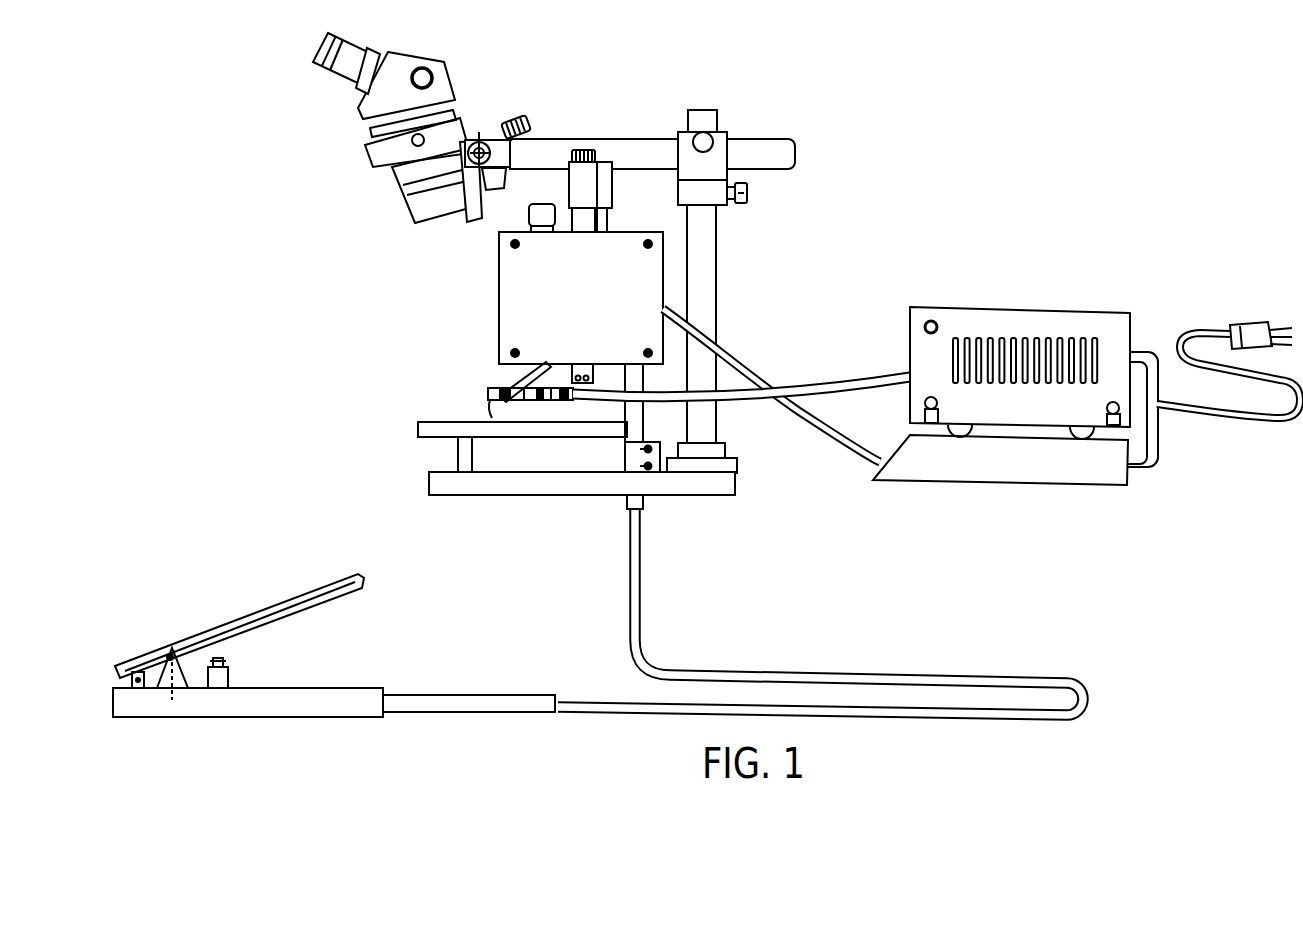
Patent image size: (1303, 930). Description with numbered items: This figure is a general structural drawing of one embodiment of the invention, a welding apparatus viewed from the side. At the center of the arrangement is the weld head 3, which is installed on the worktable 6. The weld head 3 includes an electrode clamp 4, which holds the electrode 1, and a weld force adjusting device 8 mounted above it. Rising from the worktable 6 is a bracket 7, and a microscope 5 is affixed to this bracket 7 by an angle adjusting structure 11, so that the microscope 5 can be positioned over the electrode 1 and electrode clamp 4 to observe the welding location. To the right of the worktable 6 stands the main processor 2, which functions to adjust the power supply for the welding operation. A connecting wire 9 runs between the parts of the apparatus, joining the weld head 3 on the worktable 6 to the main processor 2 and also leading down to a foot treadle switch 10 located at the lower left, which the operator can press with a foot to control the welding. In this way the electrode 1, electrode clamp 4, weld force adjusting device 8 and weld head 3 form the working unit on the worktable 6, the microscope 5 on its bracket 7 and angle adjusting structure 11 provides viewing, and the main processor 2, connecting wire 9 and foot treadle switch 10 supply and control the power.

The electrode 1 is at (490, 405).
The main processor 2 is at (1007, 323).
The weld head 3 is at (510, 317).
The electrode clamp 4 is at (519, 397).
The microscope 5 is at (438, 93).
The worktable 6 is at (657, 480).
The bracket 7 is at (715, 157).
The weld force adjusting device 8 is at (583, 190).
The connecting wire 9 is at (745, 368).
The foot treadle switch 10 is at (233, 672).
The angle adjusting structure 11 is at (532, 123).